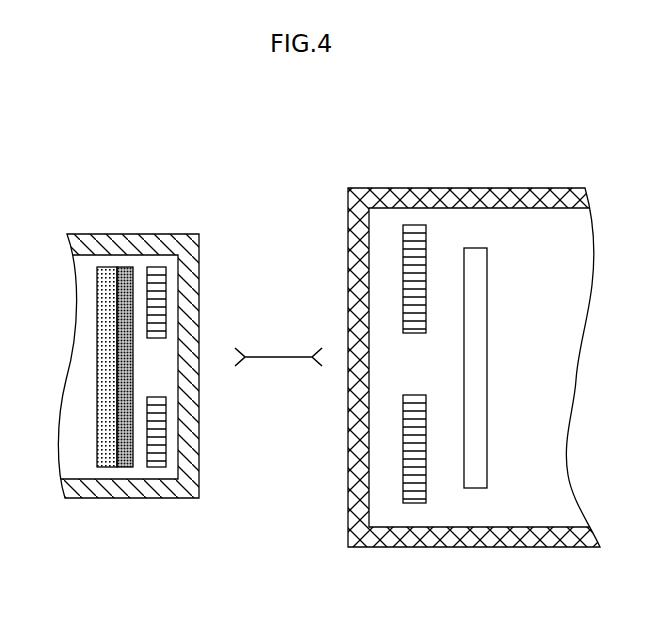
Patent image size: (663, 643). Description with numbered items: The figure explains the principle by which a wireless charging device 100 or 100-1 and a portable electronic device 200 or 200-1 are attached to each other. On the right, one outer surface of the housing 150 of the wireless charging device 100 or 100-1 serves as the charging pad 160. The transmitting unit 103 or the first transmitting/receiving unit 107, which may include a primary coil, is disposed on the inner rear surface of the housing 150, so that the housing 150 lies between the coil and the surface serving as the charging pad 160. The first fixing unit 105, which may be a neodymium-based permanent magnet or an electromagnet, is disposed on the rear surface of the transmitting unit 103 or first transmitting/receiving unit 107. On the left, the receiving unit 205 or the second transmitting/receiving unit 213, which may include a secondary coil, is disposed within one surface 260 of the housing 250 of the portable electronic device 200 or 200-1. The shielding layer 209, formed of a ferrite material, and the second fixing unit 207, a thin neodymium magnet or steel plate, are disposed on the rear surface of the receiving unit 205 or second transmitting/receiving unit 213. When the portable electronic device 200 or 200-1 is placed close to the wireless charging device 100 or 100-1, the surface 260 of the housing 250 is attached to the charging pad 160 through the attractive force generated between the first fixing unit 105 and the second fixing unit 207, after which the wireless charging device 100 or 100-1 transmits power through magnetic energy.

The wireless charging device 100 is at (464, 339).
The wireless charging device 100-1 is at (464, 339).
The transmitting unit 103 is at (417, 488).
The first fixing unit 105 is at (480, 478).
The first transmitting/receiving unit 107 is at (411, 404).
The housing 150 is at (540, 540).
The charging pad 160 is at (464, 382).
The portable electronic device 200 is at (145, 340).
The portable electronic device 200-1 is at (145, 340).
The receiving unit 205 is at (166, 458).
The second fixing unit 207 is at (100, 467).
The shielding layer 209 is at (131, 467).
The second transmitting/receiving unit 213 is at (178, 415).
The housing 250 is at (195, 498).
The surface 260 is at (145, 387).